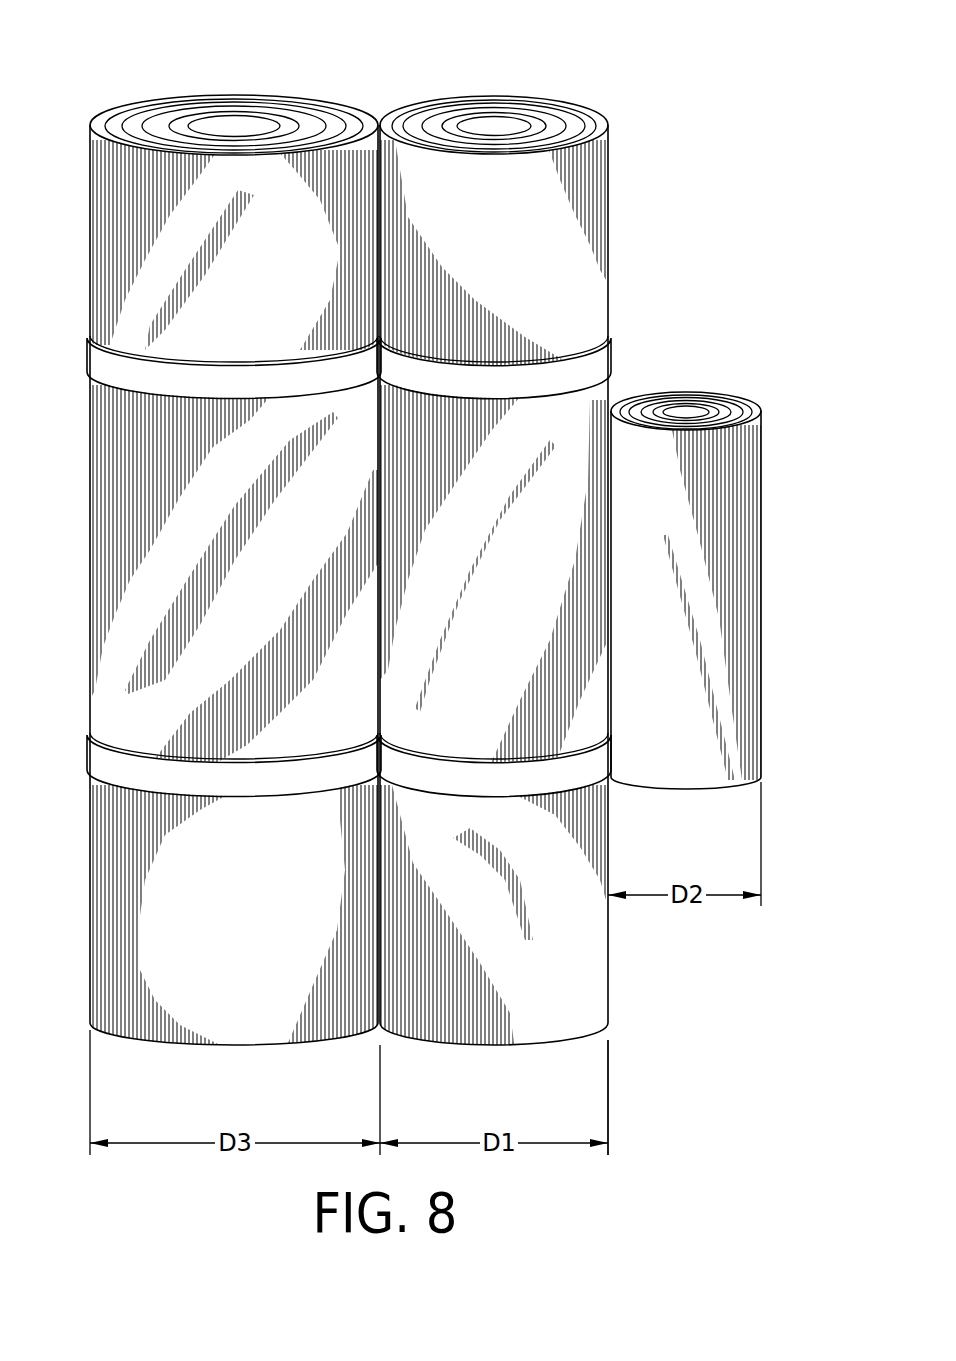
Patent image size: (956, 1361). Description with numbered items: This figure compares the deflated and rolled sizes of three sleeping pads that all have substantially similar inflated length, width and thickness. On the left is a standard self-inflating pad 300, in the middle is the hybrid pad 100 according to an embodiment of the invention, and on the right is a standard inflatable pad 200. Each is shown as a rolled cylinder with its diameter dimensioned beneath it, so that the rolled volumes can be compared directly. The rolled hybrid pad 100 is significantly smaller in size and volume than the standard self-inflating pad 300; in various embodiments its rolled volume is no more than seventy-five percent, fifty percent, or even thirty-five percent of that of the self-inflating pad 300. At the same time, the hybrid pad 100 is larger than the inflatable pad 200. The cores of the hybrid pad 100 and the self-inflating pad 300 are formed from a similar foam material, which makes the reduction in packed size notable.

The standard self-inflating pad 300 is at (169, 76).
The hybrid pad 100 is at (558, 76).
The standard inflatable pad 200 is at (727, 372).